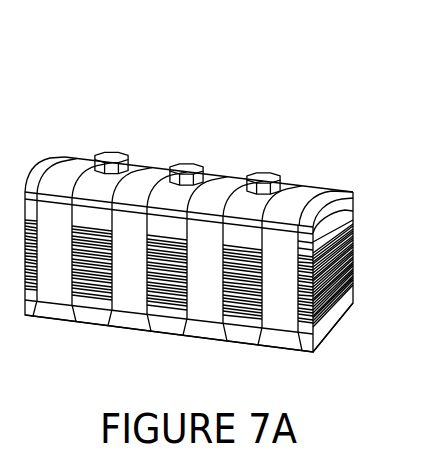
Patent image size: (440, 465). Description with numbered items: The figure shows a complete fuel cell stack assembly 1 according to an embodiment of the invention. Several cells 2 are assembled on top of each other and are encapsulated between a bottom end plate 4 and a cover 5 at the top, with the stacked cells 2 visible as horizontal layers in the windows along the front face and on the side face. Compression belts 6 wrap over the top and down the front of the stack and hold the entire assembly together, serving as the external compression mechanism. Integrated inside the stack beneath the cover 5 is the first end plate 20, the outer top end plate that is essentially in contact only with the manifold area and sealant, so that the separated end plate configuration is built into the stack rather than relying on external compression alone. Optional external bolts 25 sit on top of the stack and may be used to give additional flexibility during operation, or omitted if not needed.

The stack assembly 1 is at (78, 60).
The cells 2 is at (362, 270).
The end plate 4 is at (338, 317).
The cover 5 is at (338, 204).
The compression belts 6 is at (75, 170).
The first end plate 20 is at (342, 221).
The external bolts 25 is at (110, 158).